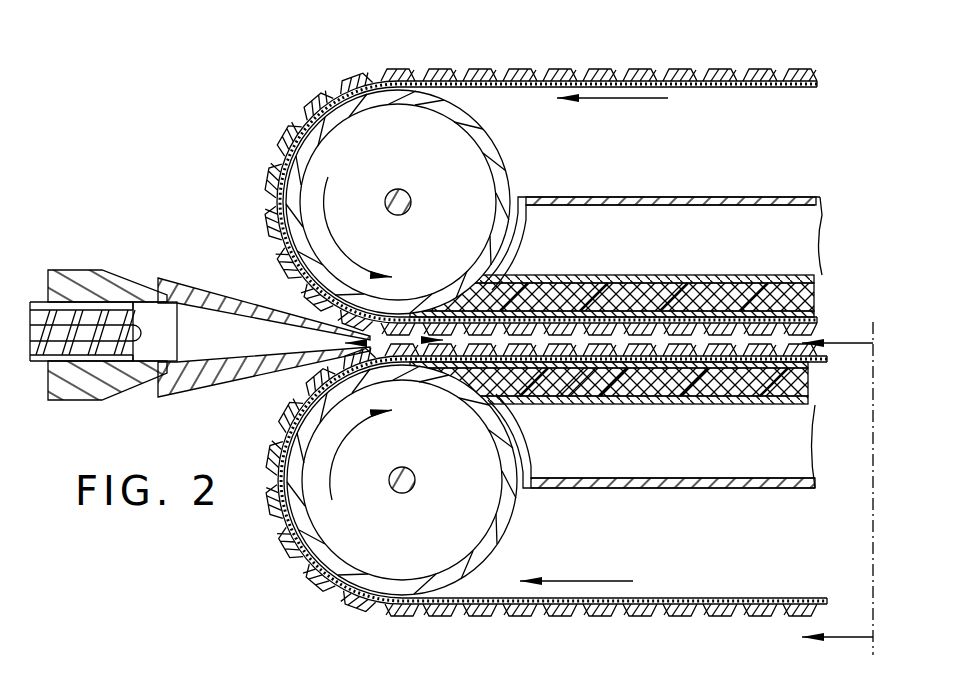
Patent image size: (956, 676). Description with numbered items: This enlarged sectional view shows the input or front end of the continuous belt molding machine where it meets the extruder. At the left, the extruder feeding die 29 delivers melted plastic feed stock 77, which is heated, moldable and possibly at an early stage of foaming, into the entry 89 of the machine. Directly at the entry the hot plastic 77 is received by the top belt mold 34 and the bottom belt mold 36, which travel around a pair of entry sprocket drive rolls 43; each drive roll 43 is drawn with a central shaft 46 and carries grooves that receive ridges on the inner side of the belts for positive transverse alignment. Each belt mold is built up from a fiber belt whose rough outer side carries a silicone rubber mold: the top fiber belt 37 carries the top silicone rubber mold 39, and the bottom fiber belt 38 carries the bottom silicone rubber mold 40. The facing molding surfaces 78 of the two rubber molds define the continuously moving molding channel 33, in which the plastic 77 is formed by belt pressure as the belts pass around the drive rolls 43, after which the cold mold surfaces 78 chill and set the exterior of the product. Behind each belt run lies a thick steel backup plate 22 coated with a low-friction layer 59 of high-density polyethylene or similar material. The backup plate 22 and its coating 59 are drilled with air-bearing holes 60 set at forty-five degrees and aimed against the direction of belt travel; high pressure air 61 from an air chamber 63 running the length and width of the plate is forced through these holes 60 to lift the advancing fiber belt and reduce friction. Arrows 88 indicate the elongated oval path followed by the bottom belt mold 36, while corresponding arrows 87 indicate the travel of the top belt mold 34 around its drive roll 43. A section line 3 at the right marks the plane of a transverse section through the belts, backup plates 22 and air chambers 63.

The section line 3- 3 is at (837, 488).
The backup plate 22 is at (812, 272).
The extruder feeding die 29 is at (200, 342).
The molding channel 33 is at (537, 335).
The top belt mold 34 is at (540, 174).
The bottom belt mold 36 is at (546, 503).
The top fiber belt 37 is at (747, 84).
The bottom fiber belt 38 is at (783, 598).
The top silicone rubber mold 39 is at (702, 67).
The bottom silicone rubber mold 40 is at (630, 618).
The sprocket drive roll 43 is at (503, 177).
The roller shaft 46 is at (399, 189).
The backup plate coating layer 59 is at (812, 300).
The air-bearing holes 60 is at (793, 272).
The high pressure air 61 is at (689, 270).
The air chamber 63 is at (712, 208).
The melted plastic feed stock 77 is at (290, 293).
The molding surfaces 78 is at (598, 352).
The upper belt direction of travel 87 is at (620, 98).
The arrows 88 is at (582, 581).
The entry 89 is at (286, 388).